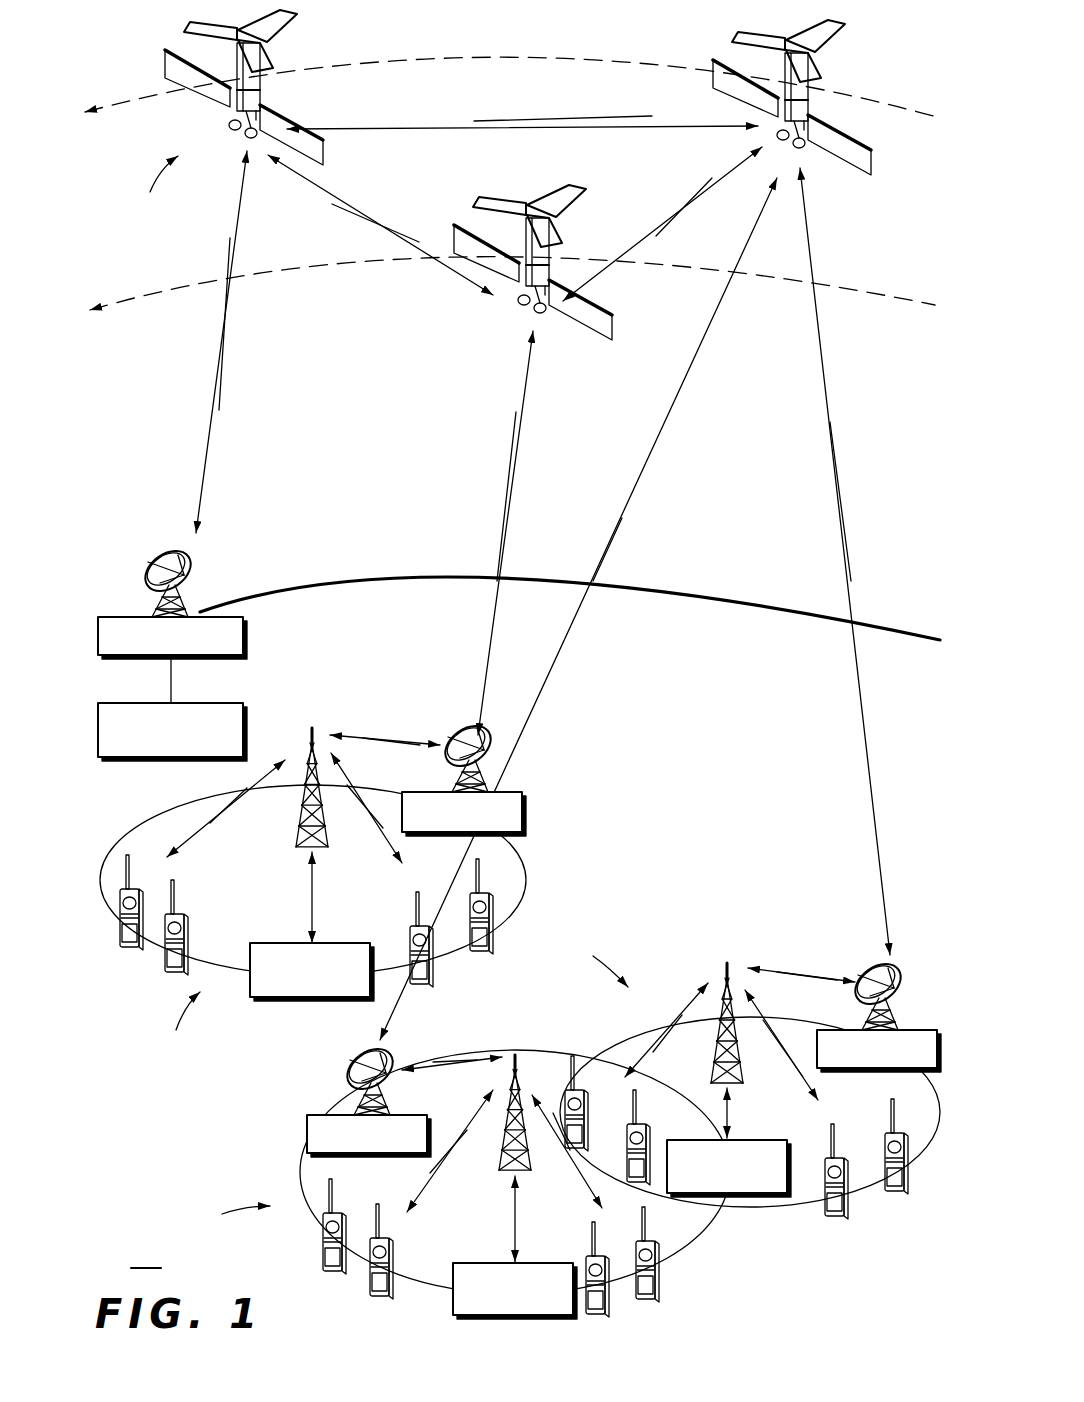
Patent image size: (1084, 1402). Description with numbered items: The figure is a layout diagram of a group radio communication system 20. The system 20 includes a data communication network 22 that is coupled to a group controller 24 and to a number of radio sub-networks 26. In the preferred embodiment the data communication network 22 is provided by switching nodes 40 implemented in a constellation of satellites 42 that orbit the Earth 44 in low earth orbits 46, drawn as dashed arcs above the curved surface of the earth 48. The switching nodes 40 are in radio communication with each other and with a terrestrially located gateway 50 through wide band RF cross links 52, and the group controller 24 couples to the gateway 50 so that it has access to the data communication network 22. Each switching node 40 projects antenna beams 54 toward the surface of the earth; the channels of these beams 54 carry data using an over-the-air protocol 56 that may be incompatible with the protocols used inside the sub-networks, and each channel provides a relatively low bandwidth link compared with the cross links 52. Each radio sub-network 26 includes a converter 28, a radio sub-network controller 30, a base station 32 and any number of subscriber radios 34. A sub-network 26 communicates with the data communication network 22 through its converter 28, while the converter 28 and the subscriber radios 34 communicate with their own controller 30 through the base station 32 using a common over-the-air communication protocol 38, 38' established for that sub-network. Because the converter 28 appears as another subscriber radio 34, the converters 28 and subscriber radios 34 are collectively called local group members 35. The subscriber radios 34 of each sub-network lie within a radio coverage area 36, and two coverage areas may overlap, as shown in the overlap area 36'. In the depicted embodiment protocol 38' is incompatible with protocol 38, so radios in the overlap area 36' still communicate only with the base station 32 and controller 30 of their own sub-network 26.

The group radio communication system 20 is at (146, 1256).
The data communication network 22 is at (141, 188).
The group controller 24 is at (137, 759).
The radio sub-network 26 is at (384, 1085).
The converter 28 is at (513, 790).
The radio sub-network (RSN) controller 30 is at (266, 1003).
The base station 32 is at (301, 812).
The subscriber radio 34 is at (127, 940).
The local group member 35 is at (133, 892).
The radio coverage area 36 is at (520, 1039).
The overlap coverage area 36' is at (544, 1179).
The over-the-air communication protocol 38 is at (511, 922).
The over-the-air communication protocol (second sub-network) 38' is at (502, 1141).
The switching node 40 is at (262, 92).
The satellite 42 is at (168, 50).
The Earth 44 is at (552, 578).
The low earth orbit 46 is at (640, 66).
The earth 48 is at (712, 602).
The gateway 50 is at (137, 661).
The wide band RF cross link 52 is at (522, 113).
The antenna beam 54 is at (522, 438).
The over-the-air protocol (satellite) 56 is at (487, 658).